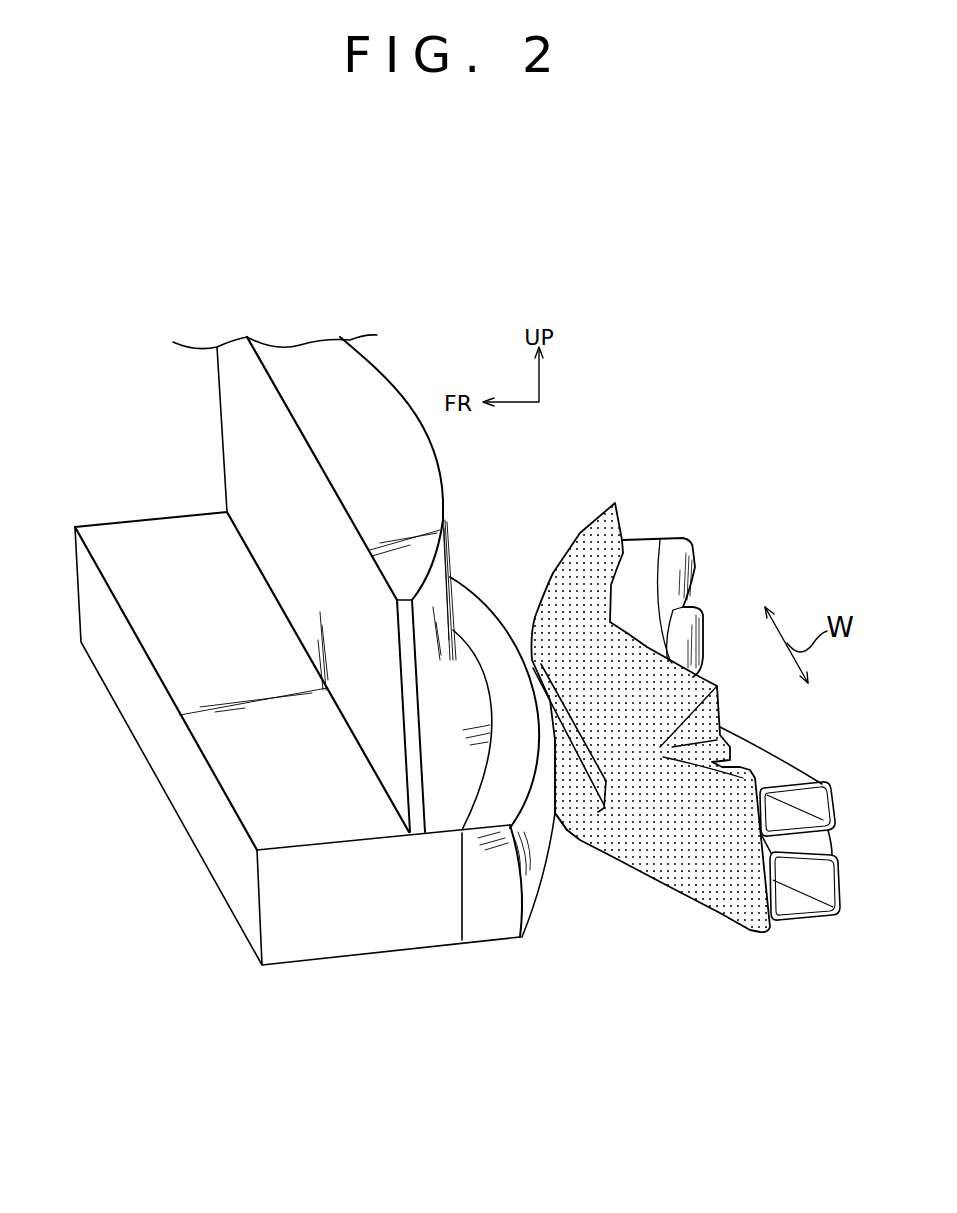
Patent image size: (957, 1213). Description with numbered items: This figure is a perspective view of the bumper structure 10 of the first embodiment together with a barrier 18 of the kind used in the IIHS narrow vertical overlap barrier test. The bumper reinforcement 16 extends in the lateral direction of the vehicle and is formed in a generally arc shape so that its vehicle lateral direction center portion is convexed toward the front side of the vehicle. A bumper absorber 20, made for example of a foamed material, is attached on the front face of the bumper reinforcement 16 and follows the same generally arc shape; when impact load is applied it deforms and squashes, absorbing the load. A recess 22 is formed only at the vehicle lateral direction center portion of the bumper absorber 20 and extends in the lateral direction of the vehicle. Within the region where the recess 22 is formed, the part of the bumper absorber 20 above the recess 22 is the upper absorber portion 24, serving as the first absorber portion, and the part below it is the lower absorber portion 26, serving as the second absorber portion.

The bumper structure 10 is at (598, 488).
The bumper reinforcement 16 is at (657, 554).
The barrier 18 is at (532, 892).
The bumper absorber 20 is at (568, 579).
The recess 22 is at (600, 812).
The upper absorber portion 24 is at (567, 708).
The lower absorber portion 26 is at (562, 813).